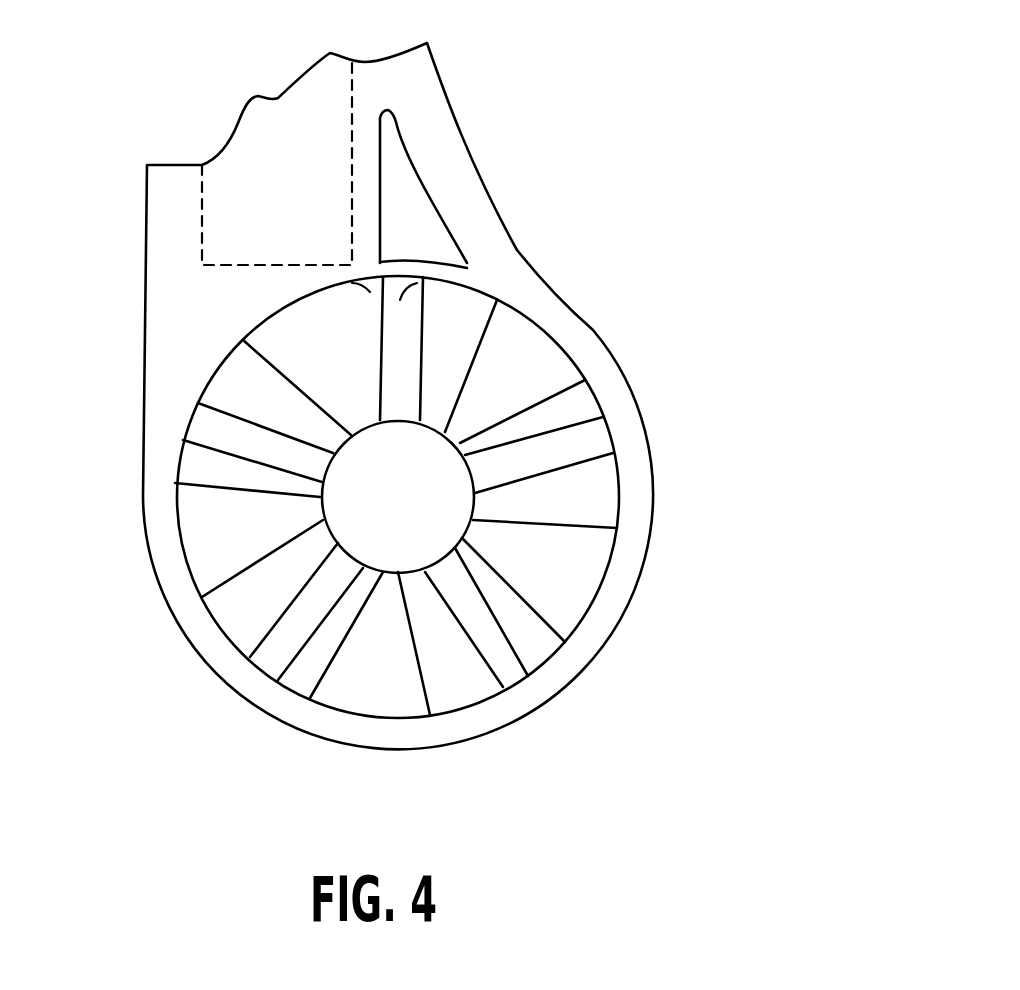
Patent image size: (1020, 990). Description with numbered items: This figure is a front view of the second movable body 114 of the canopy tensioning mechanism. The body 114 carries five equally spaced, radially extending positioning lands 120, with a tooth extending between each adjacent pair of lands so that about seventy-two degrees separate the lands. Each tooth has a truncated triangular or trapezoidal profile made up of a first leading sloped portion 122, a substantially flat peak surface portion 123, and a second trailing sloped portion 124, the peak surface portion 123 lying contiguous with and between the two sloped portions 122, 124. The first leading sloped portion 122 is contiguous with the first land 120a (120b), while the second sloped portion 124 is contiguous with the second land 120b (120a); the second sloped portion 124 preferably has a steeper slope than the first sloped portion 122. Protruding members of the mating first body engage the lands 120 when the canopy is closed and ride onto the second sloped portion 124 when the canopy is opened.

The second body 114 is at (458, 130).
The positioning land 120 is at (470, 268).
The first land 120a is at (593, 442).
The second land 120b is at (512, 668).
The first leading sloped portion 122 is at (223, 386).
The peak surface portion 123 is at (343, 367).
The second sloped portion 124 is at (352, 283).